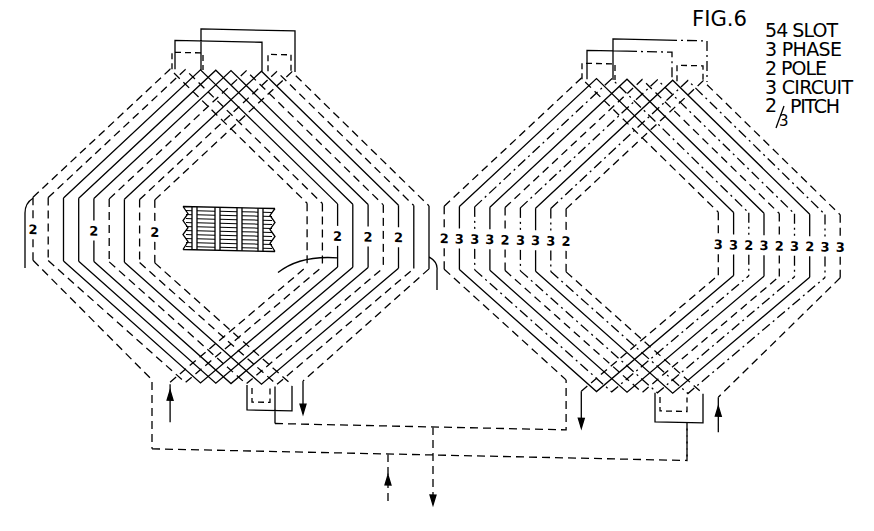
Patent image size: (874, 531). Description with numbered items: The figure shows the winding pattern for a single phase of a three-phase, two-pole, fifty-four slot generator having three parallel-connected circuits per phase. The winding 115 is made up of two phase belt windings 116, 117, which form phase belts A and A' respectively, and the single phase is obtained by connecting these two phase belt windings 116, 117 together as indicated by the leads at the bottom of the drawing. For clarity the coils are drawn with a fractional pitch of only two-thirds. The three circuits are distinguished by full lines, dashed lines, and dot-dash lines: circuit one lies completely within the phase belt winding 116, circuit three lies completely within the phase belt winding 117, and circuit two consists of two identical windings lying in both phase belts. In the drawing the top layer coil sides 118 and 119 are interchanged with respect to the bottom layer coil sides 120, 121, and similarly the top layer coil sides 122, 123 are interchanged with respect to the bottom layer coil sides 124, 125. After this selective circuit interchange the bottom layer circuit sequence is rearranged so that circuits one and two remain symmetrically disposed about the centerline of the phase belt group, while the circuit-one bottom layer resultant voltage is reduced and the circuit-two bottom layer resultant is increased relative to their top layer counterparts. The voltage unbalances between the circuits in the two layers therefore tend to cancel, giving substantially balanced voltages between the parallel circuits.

The winding 115 is at (338, 113).
The phase belt winding 116 is at (135, 110).
The phase belt winding 117 is at (548, 116).
The top layer coil side 118 is at (7, 290).
The top layer coil side 119 is at (62, 206).
The bottom layer coil side 120 is at (307, 210).
The bottom layer coil side 121 is at (295, 270).
The top layer coil side 122 is at (127, 207).
The top layer coil side 123 is at (155, 255).
The bottom layer coil side 124 is at (400, 214).
The bottom layer coil side 125 is at (441, 257).